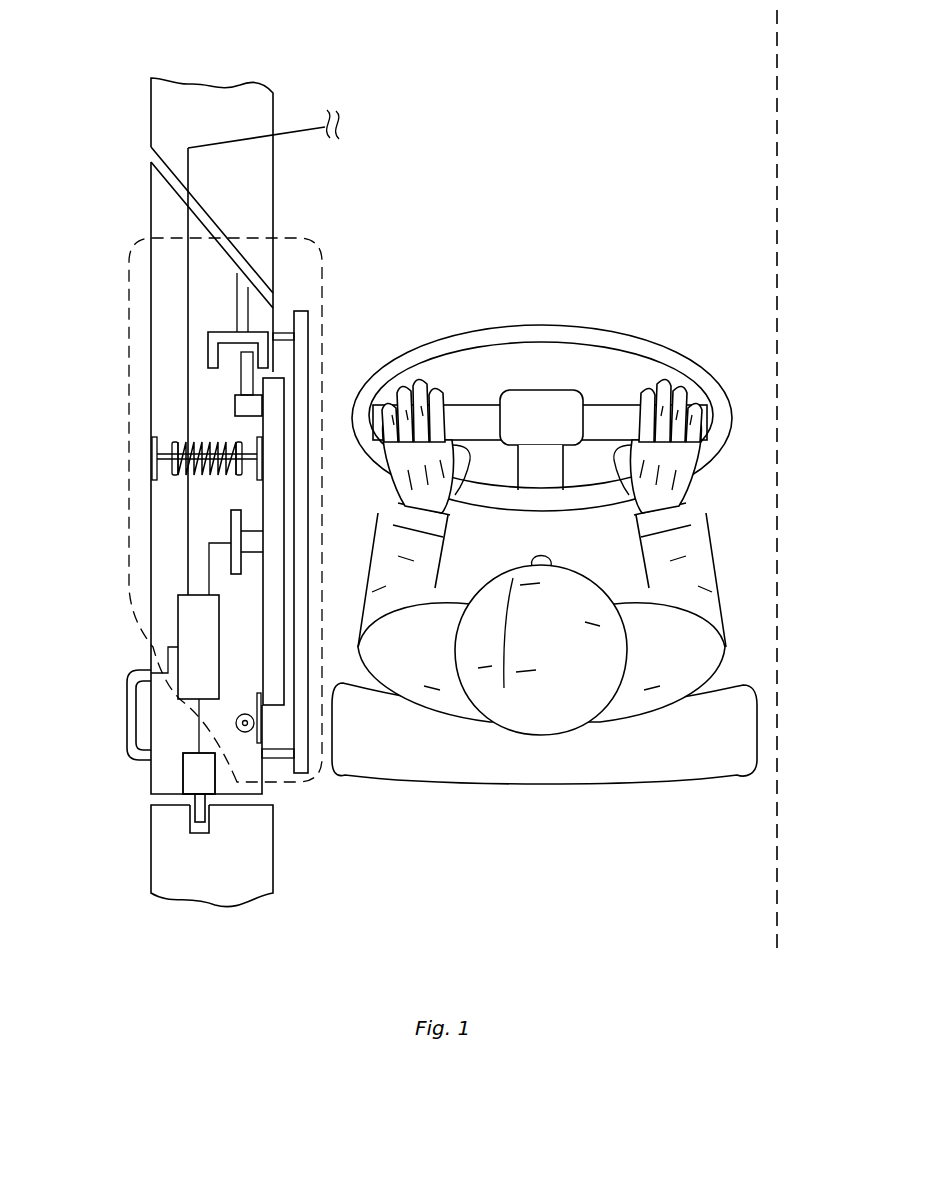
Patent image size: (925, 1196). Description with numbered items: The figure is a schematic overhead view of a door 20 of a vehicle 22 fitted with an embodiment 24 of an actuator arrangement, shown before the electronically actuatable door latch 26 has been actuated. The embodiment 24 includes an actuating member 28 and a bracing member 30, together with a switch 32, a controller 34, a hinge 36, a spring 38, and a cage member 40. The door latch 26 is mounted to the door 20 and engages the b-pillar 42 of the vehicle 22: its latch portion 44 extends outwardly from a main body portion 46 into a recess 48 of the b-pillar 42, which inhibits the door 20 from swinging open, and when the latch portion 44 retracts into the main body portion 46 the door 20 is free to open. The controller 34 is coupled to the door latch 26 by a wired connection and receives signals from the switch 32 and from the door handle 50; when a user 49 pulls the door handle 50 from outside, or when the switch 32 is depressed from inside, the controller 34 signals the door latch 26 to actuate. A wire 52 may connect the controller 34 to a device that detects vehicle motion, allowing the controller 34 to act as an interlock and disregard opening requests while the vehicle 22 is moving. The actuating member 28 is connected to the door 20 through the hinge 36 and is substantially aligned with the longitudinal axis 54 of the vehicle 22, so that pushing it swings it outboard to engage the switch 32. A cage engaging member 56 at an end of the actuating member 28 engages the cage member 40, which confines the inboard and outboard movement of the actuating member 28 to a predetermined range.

The door 20 is at (148, 347).
The vehicle 22 is at (116, 76).
The embodiment of the actuator arrangement 24 is at (132, 462).
The electronically actuatable door latch 26 is at (180, 752).
The actuating member 28 is at (275, 556).
The bracing member 30 is at (302, 367).
The switch 32 is at (238, 519).
The controller 34 is at (192, 618).
The hinge 36 is at (242, 713).
The spring 38 is at (197, 470).
The cage member 40 is at (208, 334).
The b-pillar 42 is at (260, 850).
The latch portion 44 is at (198, 814).
The main body portion 46 is at (195, 781).
The recess 48 is at (203, 828).
The user 49 is at (693, 568).
The door handle 50 is at (128, 696).
The wire 52 is at (190, 525).
The longitudinal axis 54 is at (777, 290).
The cage engaging member 56 is at (245, 405).